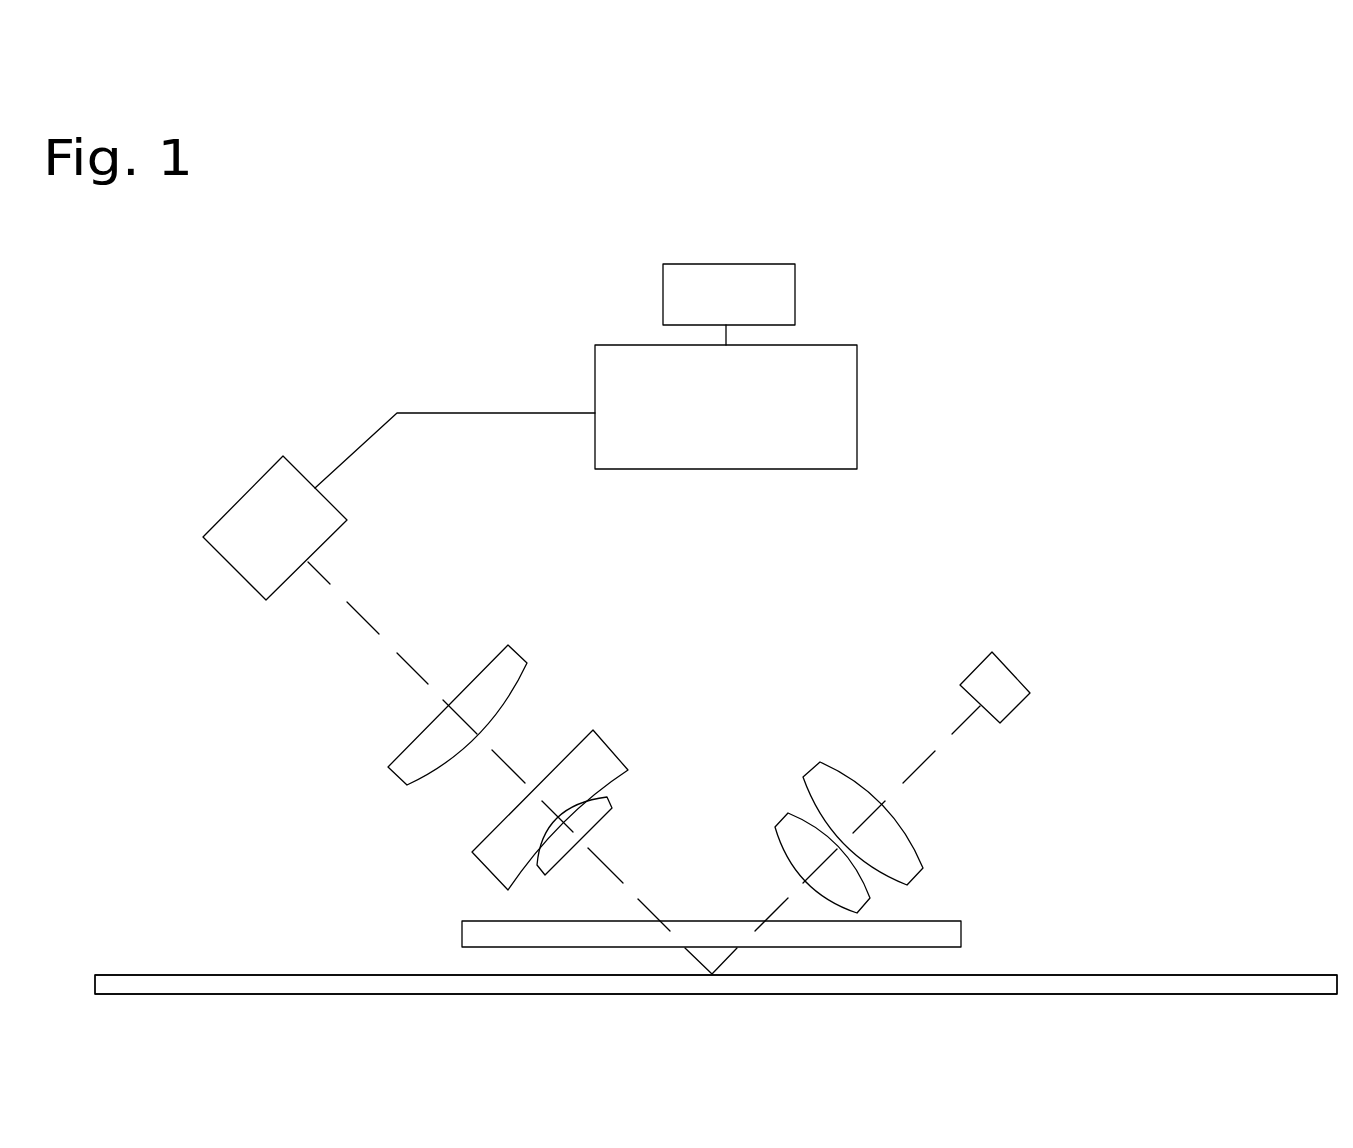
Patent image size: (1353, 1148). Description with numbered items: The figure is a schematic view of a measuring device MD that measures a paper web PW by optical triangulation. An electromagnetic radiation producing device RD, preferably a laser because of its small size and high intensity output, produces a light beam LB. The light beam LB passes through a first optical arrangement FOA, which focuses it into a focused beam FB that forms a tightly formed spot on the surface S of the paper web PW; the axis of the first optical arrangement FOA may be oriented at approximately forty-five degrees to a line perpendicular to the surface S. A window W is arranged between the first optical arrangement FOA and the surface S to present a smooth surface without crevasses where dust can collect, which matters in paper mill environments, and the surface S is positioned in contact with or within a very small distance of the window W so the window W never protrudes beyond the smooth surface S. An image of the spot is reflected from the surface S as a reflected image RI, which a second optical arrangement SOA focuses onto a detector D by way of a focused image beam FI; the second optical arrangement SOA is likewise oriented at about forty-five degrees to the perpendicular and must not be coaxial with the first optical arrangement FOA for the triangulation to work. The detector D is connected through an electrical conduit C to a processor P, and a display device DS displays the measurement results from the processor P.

The measuring device MD is at (1202, 318).
The display device DS is at (807, 292).
The processor P is at (843, 475).
The electrical conduit C is at (438, 407).
The detector D is at (242, 575).
The focused image beam FI is at (378, 610).
The second optical arrangement SOA is at (350, 780).
The reflected image RI is at (637, 867).
The focused beam FB is at (775, 902).
The light beam LB is at (915, 755).
The electromagnetic radiation producing device RD is at (1023, 705).
The first optical arrangement FOA is at (952, 860).
The window W is at (970, 937).
The surface S is at (263, 975).
The paper web PW is at (1223, 963).